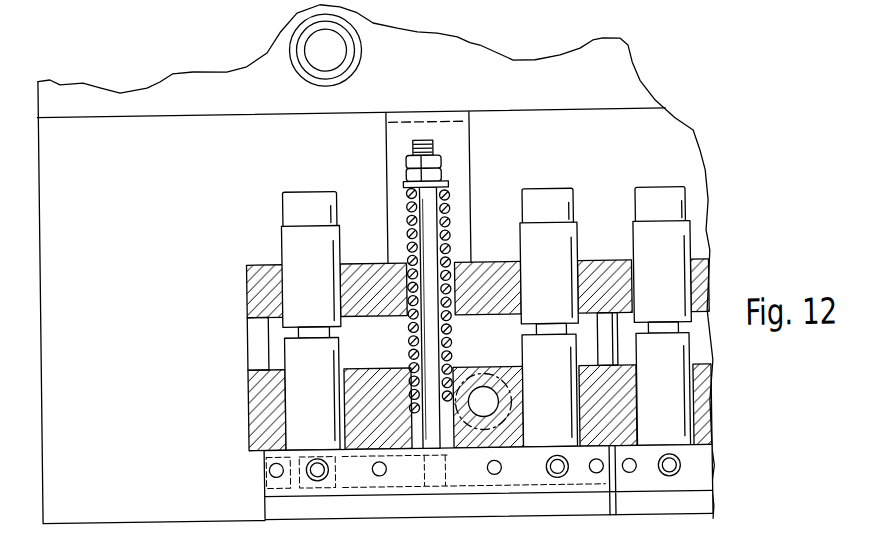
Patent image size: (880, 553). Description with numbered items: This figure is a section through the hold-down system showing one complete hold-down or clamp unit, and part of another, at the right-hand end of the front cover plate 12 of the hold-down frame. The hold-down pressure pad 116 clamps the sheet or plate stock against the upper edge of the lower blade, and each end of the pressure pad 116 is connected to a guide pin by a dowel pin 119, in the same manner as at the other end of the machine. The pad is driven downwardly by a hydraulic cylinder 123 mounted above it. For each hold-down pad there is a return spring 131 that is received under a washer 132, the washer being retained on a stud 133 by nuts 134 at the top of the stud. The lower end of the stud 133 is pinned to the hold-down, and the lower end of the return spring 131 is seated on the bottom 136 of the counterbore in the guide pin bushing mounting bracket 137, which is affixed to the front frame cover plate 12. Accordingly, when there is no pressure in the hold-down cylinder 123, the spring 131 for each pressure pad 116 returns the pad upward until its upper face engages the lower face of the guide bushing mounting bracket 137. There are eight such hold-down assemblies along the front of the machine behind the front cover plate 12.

The front cover plate 12 is at (166, 188).
The pressure pad 116 is at (491, 508).
The dowel pin 119 is at (311, 473).
The hydraulic cylinder 123 is at (299, 205).
The return spring 131 is at (444, 209).
The washer 132 is at (449, 185).
The stud 133 is at (429, 254).
The nuts 134 is at (442, 164).
The bottom of the counterbore 136 is at (416, 415).
The guide pin bushing mounting bracket 137 is at (385, 378).